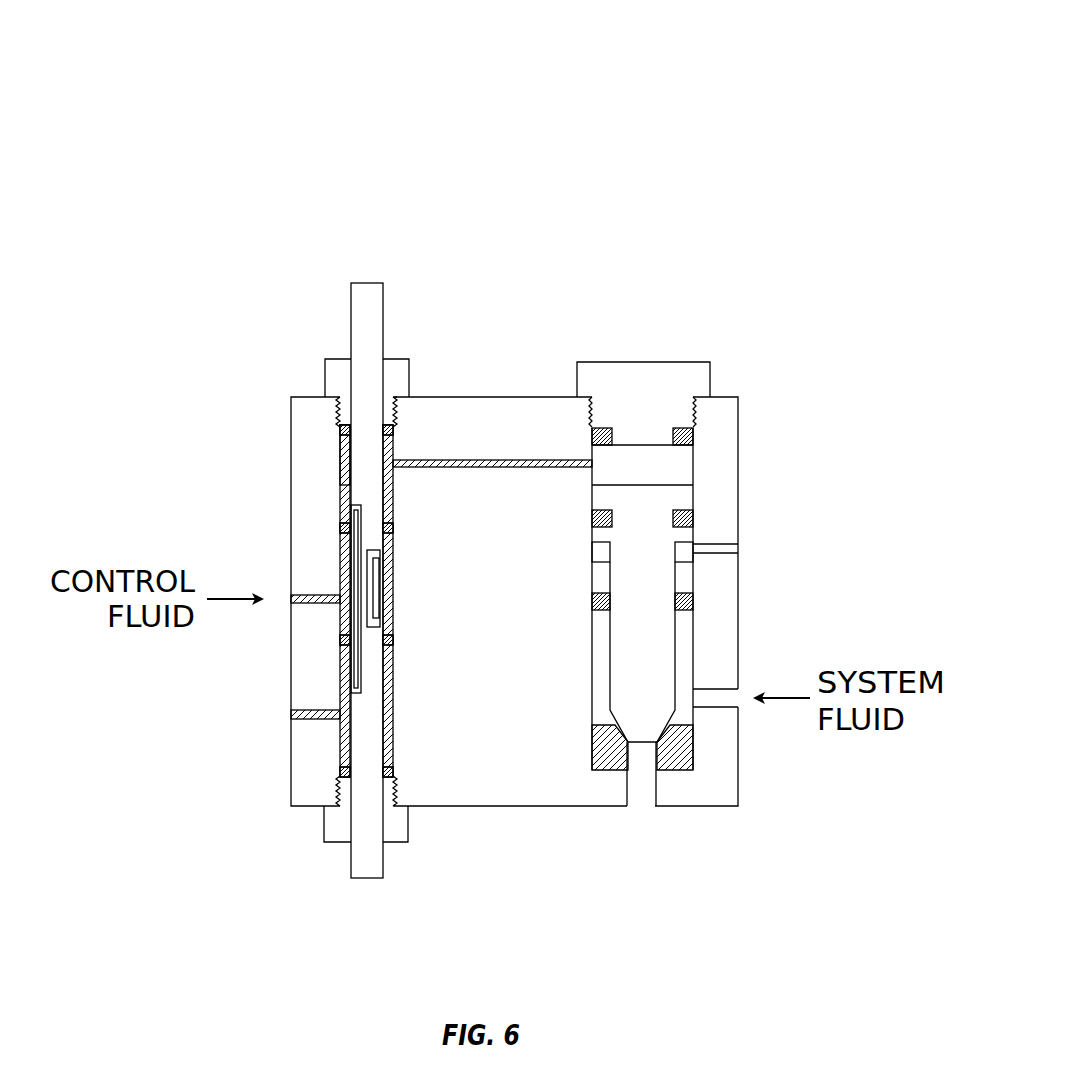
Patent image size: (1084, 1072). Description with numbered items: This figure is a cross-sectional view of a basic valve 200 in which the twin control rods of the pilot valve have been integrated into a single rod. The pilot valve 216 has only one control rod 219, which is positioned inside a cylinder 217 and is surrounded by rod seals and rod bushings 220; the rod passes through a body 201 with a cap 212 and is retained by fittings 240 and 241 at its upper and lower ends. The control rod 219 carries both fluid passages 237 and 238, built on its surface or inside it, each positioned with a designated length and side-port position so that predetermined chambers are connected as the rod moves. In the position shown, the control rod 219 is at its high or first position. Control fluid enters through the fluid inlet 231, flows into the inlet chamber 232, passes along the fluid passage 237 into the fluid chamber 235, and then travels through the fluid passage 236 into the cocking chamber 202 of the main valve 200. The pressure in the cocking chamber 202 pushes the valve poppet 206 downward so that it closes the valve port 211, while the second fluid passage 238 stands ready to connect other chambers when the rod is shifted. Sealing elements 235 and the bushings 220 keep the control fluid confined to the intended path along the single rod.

The valve 200 is at (852, 101).
The valve body 201 is at (728, 423).
The cocking chamber 202 is at (680, 463).
The valve poppet 206 is at (660, 650).
The valve port 211 is at (647, 808).
The cap 212 is at (647, 375).
The pilot valve 216 is at (216, 299).
The cylinder 217 is at (343, 470).
The control rod 219 is at (361, 343).
The rod bushings 220 is at (342, 490).
The fluid inlet 231 is at (293, 595).
The inlet chamber 232 is at (343, 615).
The fluid chamber 235 is at (340, 503).
The fluid passage 236 is at (517, 460).
The fluid passage 237 is at (366, 578).
The fluid passage 238 is at (357, 675).
The upper nut 240 is at (396, 372).
The lower nut 241 is at (400, 848).